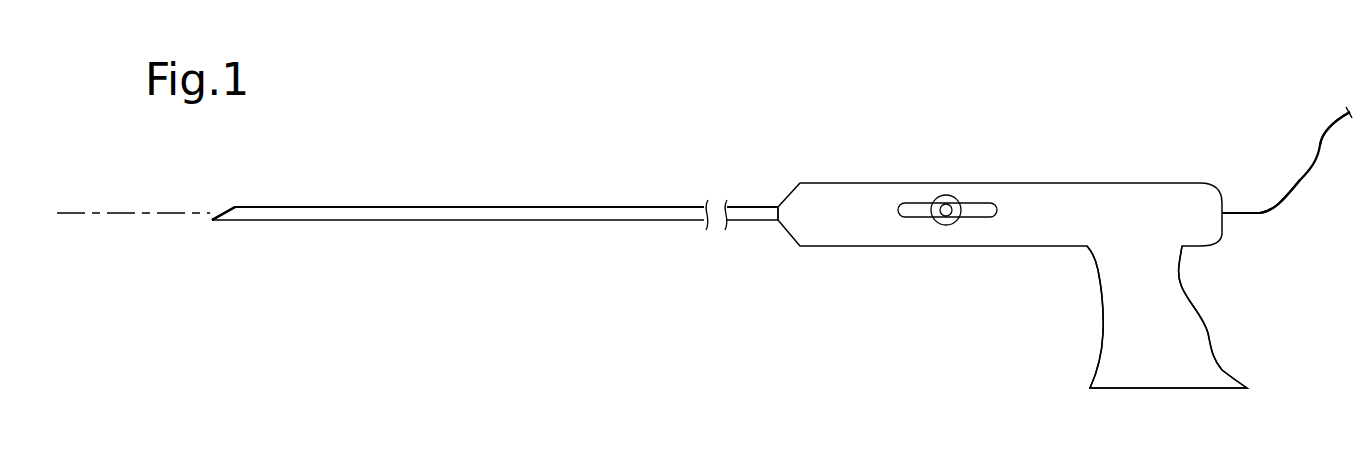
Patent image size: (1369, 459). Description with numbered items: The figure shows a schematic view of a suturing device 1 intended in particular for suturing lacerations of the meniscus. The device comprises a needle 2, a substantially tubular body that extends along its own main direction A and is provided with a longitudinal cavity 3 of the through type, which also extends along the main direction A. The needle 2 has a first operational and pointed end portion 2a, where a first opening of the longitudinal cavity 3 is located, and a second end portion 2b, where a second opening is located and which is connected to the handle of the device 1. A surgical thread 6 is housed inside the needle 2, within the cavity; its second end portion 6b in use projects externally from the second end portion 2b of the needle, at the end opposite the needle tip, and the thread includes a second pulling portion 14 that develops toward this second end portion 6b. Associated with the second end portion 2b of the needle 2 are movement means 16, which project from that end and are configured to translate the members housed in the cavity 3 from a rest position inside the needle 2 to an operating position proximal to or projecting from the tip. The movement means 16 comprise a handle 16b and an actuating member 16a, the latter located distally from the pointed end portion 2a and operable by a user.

The suturing device 1 is at (585, 160).
The main direction A is at (130, 215).
The needle 2 is at (497, 220).
The first operational and pointed end portion 2a is at (228, 222).
The second end portion 2b is at (778, 207).
The longitudinal cavity 3 is at (403, 214).
The movement means 16 is at (997, 247).
The actuating member 16a is at (946, 205).
The handle 16b is at (1159, 376).
The surgical thread 6 is at (1313, 175).
The second end portion 6b is at (1340, 114).
The second pulling portion 14 is at (1273, 195).